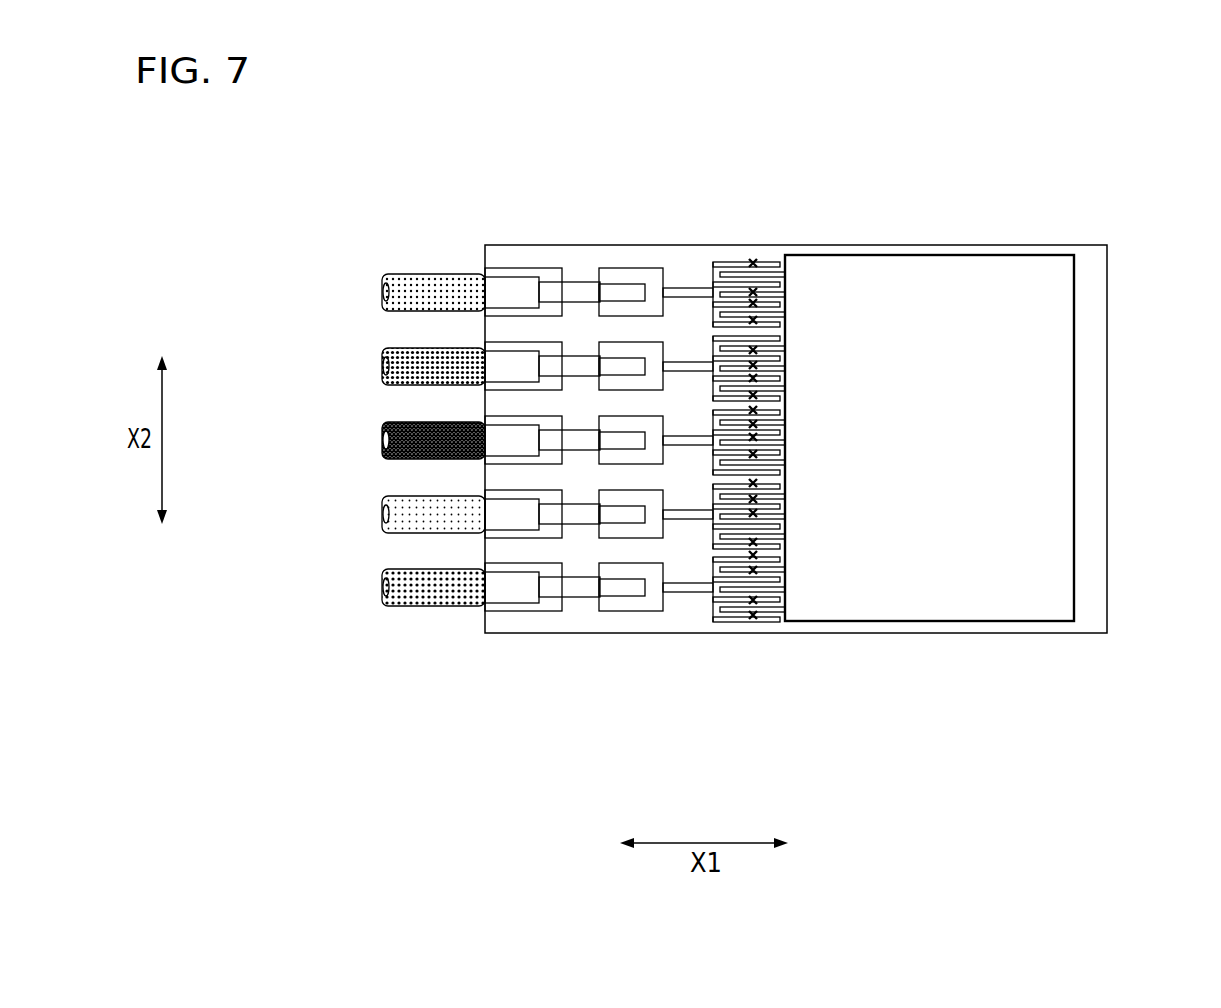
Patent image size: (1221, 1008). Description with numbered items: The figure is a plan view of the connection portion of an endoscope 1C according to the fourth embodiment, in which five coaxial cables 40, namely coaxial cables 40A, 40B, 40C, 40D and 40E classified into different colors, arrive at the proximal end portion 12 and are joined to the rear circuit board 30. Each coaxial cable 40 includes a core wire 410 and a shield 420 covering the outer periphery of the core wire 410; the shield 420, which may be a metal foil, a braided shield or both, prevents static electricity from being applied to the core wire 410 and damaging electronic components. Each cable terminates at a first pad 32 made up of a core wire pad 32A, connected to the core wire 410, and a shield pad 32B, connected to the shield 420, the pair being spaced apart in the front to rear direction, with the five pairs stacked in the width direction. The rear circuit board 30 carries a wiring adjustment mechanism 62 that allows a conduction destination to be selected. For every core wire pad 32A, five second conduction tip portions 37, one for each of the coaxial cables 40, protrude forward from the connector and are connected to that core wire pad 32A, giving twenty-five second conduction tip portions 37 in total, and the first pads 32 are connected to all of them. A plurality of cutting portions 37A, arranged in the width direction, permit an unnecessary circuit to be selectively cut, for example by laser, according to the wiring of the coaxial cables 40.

The endoscope 1C is at (900, 175).
The proximal end portion 12 is at (1080, 235).
The rear circuit board 30 is at (1107, 470).
The first pad 32 is at (650, 140).
The core wire pad 32A is at (620, 268).
The shield pad 32B is at (543, 268).
The second conduction tip portion 37 is at (778, 272).
The cutting portion 37A is at (751, 252).
The coaxial cable 40 is at (361, 425).
The coaxial cable 40A is at (413, 347).
The coaxial cable 40B is at (413, 273).
The coaxial cable 40C is at (413, 568).
The coaxial cable 40D is at (413, 495).
The coaxial cable 40E is at (413, 422).
The wiring adjustment mechanism 62 is at (967, 255).
The core wire 410 is at (632, 283).
The shield 420 is at (507, 277).